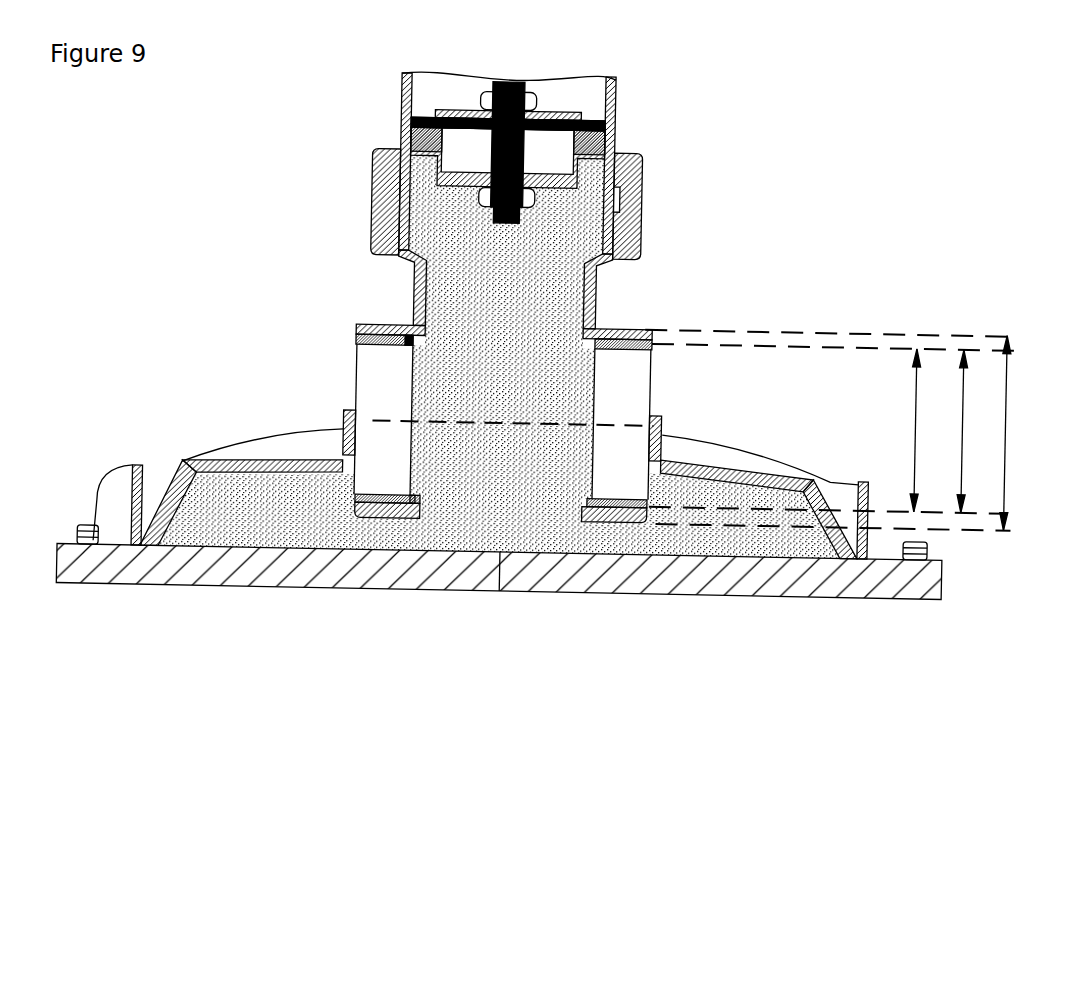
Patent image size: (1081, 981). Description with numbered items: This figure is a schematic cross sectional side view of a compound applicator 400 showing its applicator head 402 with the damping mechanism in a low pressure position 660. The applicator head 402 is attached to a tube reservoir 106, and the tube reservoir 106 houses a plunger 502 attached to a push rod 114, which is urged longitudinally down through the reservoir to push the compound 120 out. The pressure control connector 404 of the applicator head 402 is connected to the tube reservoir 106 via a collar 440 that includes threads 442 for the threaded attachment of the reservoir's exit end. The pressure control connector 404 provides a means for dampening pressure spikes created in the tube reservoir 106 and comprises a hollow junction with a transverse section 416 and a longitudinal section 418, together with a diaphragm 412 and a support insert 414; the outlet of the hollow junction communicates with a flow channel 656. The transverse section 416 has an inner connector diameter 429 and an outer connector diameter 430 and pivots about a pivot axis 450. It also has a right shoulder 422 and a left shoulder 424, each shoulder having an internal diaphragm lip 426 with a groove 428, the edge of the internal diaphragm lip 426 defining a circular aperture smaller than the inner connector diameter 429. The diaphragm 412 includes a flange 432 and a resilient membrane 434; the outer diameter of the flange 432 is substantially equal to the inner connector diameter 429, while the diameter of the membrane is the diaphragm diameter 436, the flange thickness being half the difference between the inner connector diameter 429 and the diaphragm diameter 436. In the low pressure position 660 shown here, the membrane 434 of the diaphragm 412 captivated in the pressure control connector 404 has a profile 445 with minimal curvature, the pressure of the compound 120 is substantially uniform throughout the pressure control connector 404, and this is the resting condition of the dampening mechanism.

The compound applicator 400 is at (596, 54).
The applicator head 402 is at (218, 145).
The pressure control connector 404 is at (330, 258).
The low pressure position 660 is at (925, 125).
The push rod 114 is at (505, 82).
The tube reservoir 106 is at (437, 113).
The compound 120 is at (455, 217).
The plunger 502 is at (618, 85).
The collar 440 is at (625, 155).
The threads 442 is at (630, 193).
The longitudinal section 418 is at (600, 268).
The transverse section 416 is at (617, 323).
The left shoulder 424 is at (640, 327).
The flange 432 is at (407, 338).
The right shoulder 422 is at (357, 323).
The support insert 414 is at (357, 337).
The pivot axis 450 is at (392, 422).
The diaphragm 412 is at (343, 432).
The resilient membrane 434 is at (407, 463).
The profile 445 is at (407, 478).
The groove 428 is at (420, 501).
The internal diaphragm lip 426 is at (416, 505).
The flow channel 656 is at (517, 513).
The diaphragm diameter 436 is at (913, 420).
The inner connector diameter 429 is at (960, 443).
The outer connector diameter 430 is at (1005, 470).